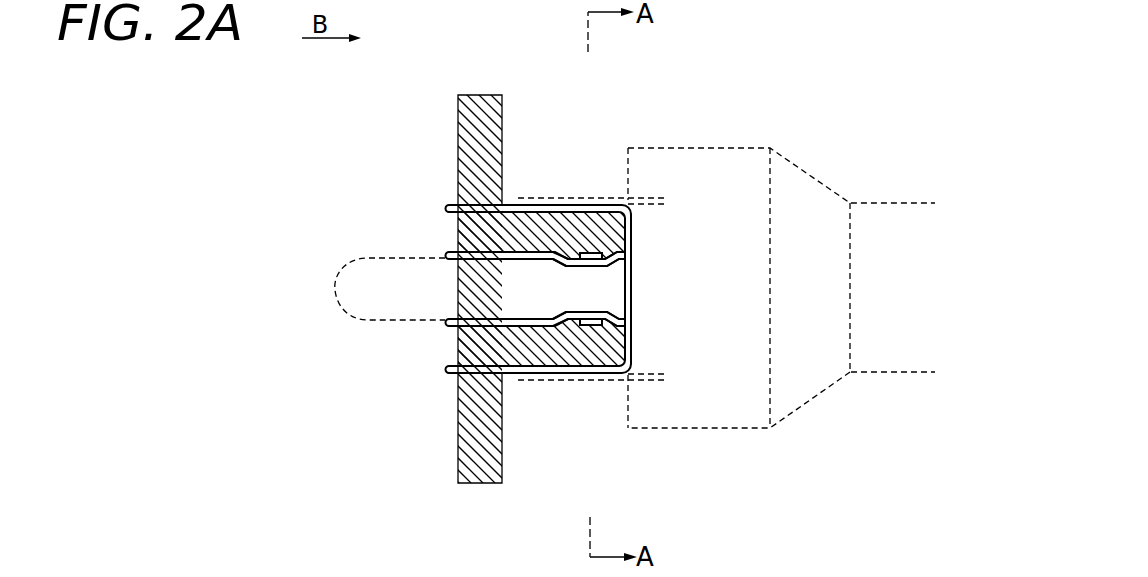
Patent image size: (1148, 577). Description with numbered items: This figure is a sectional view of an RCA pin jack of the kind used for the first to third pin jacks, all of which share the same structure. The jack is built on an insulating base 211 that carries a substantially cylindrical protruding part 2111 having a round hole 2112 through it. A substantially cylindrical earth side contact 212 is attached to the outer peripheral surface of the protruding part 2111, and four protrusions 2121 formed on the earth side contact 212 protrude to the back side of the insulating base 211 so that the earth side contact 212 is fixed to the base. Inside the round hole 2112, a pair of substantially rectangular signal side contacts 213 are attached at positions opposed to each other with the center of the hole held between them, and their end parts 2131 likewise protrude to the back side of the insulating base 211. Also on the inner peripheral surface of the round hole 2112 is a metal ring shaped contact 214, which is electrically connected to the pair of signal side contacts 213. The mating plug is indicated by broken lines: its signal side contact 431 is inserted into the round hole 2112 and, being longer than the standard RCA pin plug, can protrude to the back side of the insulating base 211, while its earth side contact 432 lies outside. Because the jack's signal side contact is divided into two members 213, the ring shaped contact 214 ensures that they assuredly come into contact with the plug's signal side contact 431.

The insulating base 211 is at (480, 102).
The protruding part 2111 is at (527, 220).
The round hole 2112 is at (487, 290).
The earth side contact 212 is at (600, 205).
The protrusions 2121 is at (445, 206).
The end parts 2131 is at (445, 256).
The signal side contacts 213 is at (549, 262).
The ring shaped contact 214 is at (592, 266).
The signal side contact 431 is at (343, 305).
The earth side contact 432 is at (575, 200).